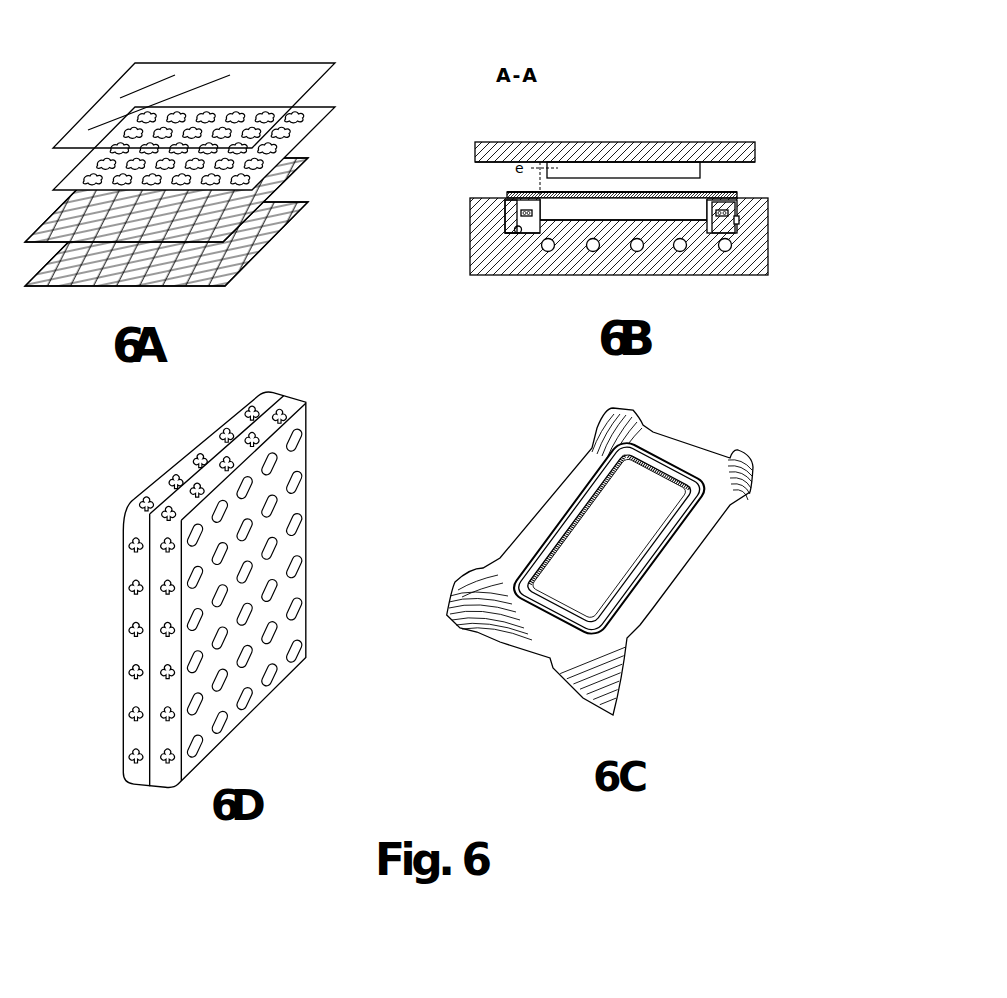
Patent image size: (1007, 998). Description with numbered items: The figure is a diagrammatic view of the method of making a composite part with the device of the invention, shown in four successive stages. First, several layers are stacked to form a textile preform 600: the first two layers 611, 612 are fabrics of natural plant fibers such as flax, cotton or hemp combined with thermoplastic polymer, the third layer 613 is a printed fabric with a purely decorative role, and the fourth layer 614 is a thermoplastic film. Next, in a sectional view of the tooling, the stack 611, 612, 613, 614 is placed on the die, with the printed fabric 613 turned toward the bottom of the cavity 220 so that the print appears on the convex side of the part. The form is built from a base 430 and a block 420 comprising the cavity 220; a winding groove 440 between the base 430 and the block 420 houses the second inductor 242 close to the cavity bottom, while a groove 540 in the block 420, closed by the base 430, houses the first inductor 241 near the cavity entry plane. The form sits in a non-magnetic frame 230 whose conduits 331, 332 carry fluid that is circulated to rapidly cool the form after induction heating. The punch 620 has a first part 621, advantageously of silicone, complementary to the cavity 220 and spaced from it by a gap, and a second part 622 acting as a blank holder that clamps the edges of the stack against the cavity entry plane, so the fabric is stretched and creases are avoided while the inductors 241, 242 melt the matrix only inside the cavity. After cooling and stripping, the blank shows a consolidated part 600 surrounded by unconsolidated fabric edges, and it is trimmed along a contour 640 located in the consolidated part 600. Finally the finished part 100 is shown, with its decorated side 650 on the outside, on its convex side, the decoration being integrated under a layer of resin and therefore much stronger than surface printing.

The part 100 is at (230, 589).
The textile preform 600 is at (396, 357).
The first layer 611 is at (270, 240).
The second layer 612 is at (290, 180).
The third layer 613 is at (320, 125).
The fourth layer 614 is at (268, 63).
The punch 620 is at (710, 142).
The first part 621 is at (702, 172).
The second part 622 is at (743, 168).
The cavity 220 is at (704, 214).
The frame 230 is at (605, 276).
The first inductor 241 is at (733, 207).
The second inductor 242 is at (516, 233).
The conduit 331 is at (739, 222).
The conduit 332 is at (548, 253).
The block 420 is at (698, 222).
The base 430 is at (506, 226).
The groove 440 is at (508, 233).
The groove 540 is at (506, 213).
The contour 640 is at (540, 568).
The decorated side 650 is at (265, 543).